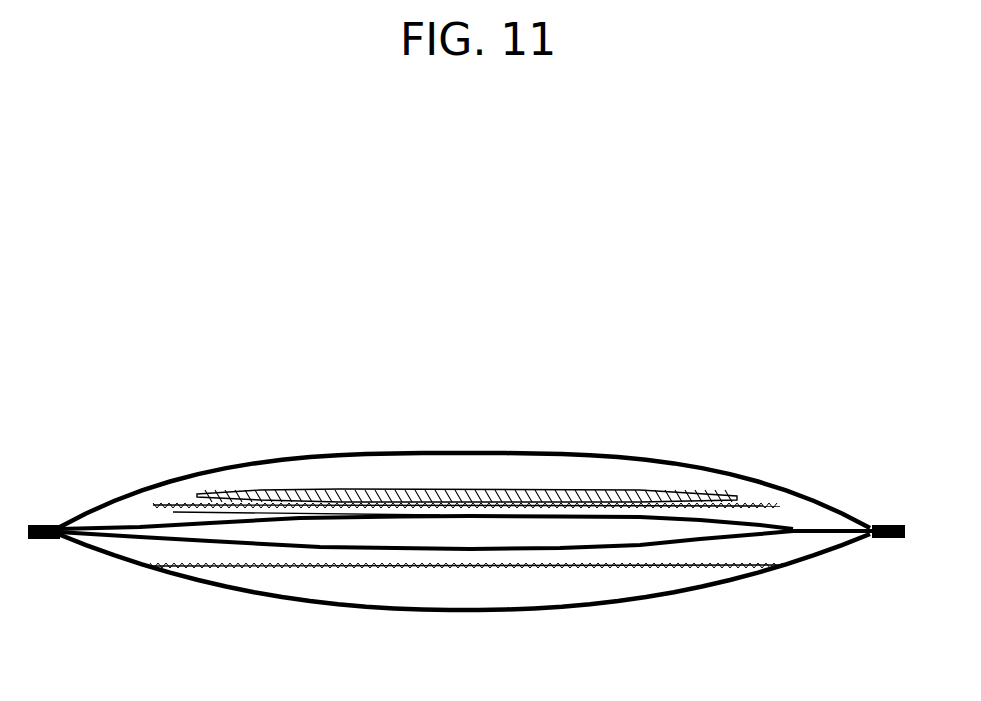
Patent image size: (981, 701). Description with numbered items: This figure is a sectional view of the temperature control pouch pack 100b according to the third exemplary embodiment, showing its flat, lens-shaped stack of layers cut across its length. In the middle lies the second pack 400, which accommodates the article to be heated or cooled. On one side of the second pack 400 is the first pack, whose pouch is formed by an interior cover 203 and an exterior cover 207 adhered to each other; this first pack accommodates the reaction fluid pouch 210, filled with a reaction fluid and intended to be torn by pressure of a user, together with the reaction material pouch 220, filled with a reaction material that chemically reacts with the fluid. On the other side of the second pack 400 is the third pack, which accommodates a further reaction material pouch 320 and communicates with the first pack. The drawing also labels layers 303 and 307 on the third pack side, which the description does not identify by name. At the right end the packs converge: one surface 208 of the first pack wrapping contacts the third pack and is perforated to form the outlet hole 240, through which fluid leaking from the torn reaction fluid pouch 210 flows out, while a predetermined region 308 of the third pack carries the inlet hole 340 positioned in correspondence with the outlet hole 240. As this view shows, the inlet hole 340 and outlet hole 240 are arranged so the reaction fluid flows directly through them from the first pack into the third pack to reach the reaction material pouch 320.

The temperature control pouch pack 100b is at (163, 386).
The exterior cover 207 is at (521, 451).
The lower cover layer 303 is at (524, 612).
The interior cover 203 is at (716, 518).
The lower substrate 307 is at (309, 550).
The reaction fluid pouch 210 is at (416, 489).
The reaction material pouch 220 is at (365, 502).
The reaction material pouch 320 is at (383, 569).
The second pack 400 is at (462, 534).
The outlet hole 240 is at (826, 531).
The inlet hole 340 is at (826, 531).
The one surface of a wrapping 208 is at (895, 524).
The predetermined region 308 is at (895, 540).